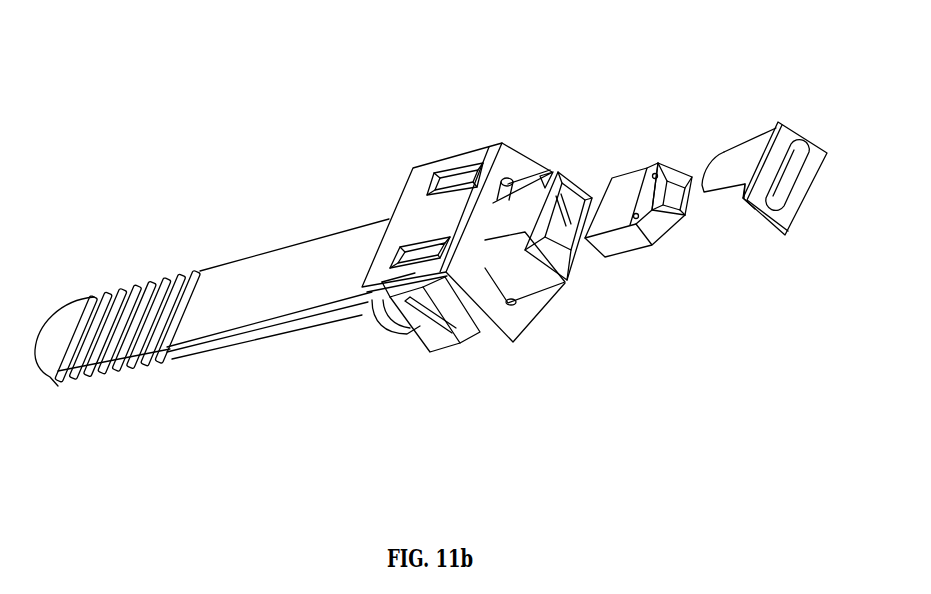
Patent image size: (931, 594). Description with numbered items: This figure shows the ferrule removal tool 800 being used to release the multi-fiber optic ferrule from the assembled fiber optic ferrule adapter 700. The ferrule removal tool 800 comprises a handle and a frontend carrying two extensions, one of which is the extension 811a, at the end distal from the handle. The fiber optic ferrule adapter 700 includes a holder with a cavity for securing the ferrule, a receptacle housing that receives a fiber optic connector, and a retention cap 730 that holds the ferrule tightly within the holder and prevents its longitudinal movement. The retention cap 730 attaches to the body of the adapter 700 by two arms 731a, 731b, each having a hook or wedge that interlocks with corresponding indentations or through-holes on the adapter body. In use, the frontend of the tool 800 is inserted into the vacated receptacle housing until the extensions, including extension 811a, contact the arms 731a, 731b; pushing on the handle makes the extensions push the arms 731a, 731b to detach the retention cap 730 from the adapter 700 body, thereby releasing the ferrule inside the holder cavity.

The ferrule removal tool 800 is at (212, 261).
The fiber optic ferrule adapter 700 is at (477, 205).
The extension 811a is at (553, 192).
The retention cap 730 is at (817, 132).
The arm 731a is at (720, 219).
The arm 731b is at (725, 273).